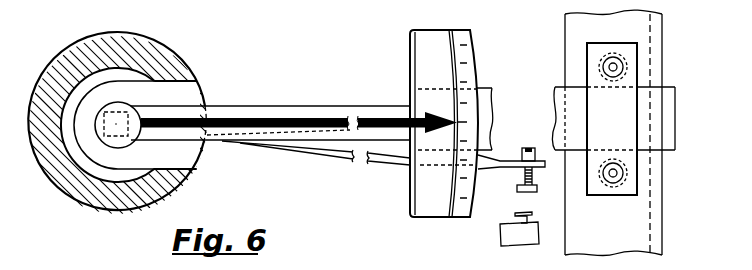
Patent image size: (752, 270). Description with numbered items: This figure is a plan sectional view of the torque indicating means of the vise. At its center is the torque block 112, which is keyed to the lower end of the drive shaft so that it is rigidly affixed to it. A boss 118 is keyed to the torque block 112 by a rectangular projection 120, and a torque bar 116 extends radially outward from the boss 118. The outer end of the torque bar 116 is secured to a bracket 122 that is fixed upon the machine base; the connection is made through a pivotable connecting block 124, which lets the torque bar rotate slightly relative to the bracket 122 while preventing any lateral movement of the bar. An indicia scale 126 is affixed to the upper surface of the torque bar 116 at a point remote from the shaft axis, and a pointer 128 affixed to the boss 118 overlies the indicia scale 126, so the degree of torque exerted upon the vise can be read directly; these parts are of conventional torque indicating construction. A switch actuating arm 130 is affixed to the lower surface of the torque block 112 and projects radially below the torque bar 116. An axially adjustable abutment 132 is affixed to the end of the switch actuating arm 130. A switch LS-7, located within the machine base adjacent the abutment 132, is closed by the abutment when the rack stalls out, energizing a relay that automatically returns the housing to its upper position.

The torque block 112 is at (102, 44).
The torque bar 116 is at (260, 106).
The boss 118 is at (124, 144).
The rectangular projection 120 is at (118, 111).
The bracket 122 is at (570, 21).
The pivotable connecting block 124 is at (627, 194).
The indicia scale 126 is at (477, 68).
The pointer 128 is at (337, 117).
The switch actuating arm 130 is at (376, 159).
The axially adjustable abutment 132 is at (533, 184).
The switch LS-7 is at (500, 232).